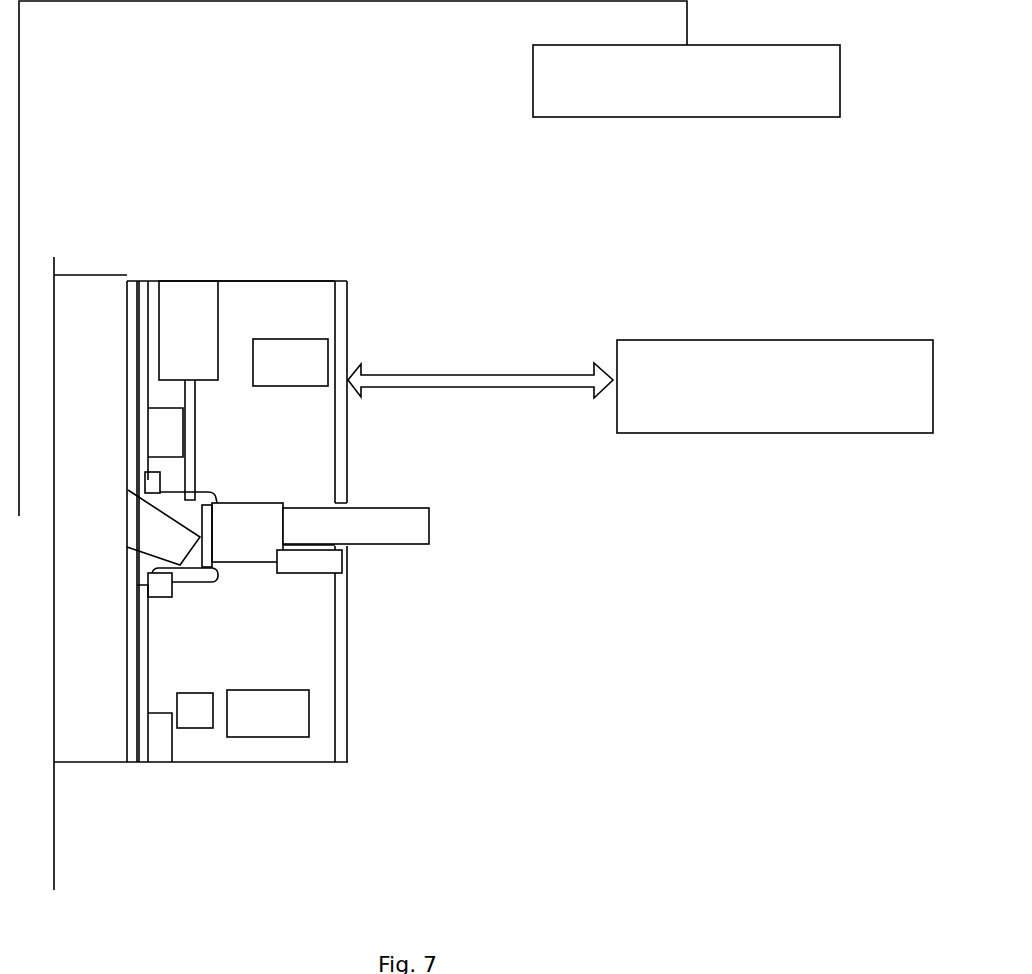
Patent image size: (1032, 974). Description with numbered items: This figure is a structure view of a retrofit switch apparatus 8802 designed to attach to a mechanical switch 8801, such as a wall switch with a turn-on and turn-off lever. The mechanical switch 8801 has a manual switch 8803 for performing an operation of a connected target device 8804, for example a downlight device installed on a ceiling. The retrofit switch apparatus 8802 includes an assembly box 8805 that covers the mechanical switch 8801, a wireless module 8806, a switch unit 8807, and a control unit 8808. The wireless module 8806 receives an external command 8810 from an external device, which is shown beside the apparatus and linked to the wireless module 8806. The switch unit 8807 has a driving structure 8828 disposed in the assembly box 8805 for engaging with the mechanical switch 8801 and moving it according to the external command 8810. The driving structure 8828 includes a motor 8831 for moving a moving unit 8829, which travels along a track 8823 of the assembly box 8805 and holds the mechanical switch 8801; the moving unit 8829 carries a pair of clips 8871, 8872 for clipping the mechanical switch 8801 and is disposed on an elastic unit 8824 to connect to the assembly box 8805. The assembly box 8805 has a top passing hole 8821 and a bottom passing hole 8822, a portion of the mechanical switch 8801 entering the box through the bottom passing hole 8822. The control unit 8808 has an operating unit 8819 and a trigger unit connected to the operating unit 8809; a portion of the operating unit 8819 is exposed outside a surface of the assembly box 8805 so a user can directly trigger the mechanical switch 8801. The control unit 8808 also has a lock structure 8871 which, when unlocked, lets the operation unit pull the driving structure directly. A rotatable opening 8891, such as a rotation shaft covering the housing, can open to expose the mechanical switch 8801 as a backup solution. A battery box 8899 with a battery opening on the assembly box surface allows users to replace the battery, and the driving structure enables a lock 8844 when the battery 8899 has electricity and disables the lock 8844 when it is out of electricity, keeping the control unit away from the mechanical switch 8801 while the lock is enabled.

The mechanical switch 8801 is at (87, 743).
The retrofit switch apparatus 8802 is at (232, 757).
The manual switch 8803 is at (140, 530).
The target device 8804 is at (655, 118).
The assembly box 8805 is at (278, 298).
The wireless module 8806 is at (302, 362).
The switch unit 8807 is at (205, 308).
The control unit 8808 is at (372, 530).
The operating unit 8809 is at (735, 337).
The external command 8810 is at (463, 387).
The operating unit 8819 is at (429, 517).
The top passing hole 8821 is at (348, 545).
The bottom passing hole 8822 is at (135, 572).
The track 8823 is at (166, 442).
The elastic unit 8824 is at (165, 590).
The driving structure 8828 is at (213, 368).
The moving unit 8829 is at (205, 493).
The motor 8831 is at (188, 300).
The lock 8844 is at (195, 720).
The clip 8871 is at (216, 497).
The clip 8872 is at (203, 582).
The rotatable opening 8891 is at (163, 755).
The battery box 8899 is at (300, 728).